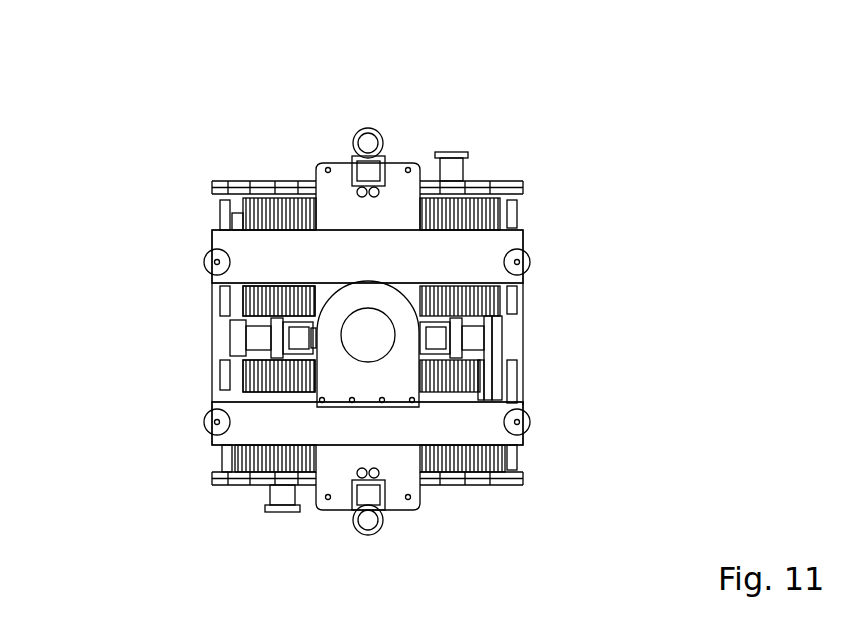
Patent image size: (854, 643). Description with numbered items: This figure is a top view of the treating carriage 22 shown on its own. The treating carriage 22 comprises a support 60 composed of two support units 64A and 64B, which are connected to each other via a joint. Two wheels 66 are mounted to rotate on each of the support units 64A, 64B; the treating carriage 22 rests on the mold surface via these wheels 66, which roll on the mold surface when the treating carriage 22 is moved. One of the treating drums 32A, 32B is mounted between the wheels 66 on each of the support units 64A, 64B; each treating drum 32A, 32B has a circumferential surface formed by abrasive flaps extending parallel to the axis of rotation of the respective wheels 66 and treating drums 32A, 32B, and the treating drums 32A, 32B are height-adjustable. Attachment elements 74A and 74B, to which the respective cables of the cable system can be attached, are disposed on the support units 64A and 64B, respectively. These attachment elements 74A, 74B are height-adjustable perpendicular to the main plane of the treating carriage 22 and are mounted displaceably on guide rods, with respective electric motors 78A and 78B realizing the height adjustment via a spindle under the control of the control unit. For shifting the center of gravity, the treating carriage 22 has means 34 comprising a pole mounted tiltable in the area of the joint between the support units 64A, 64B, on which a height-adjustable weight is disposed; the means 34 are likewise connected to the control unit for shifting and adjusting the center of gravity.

The treating carriage 22 is at (682, 56).
The treating drum 32A is at (250, 305).
The treating drum 32B is at (240, 378).
The means for shifting the center of gravity 34 is at (368, 335).
The support 60 is at (527, 407).
The support unit 64A is at (240, 243).
The support unit 64B is at (500, 440).
The wheels 66 is at (222, 212).
The attachment element 74A is at (368, 128).
The attachment element 74B is at (369, 535).
The electric motor 78A is at (365, 165).
The electric motor 78B is at (372, 500).